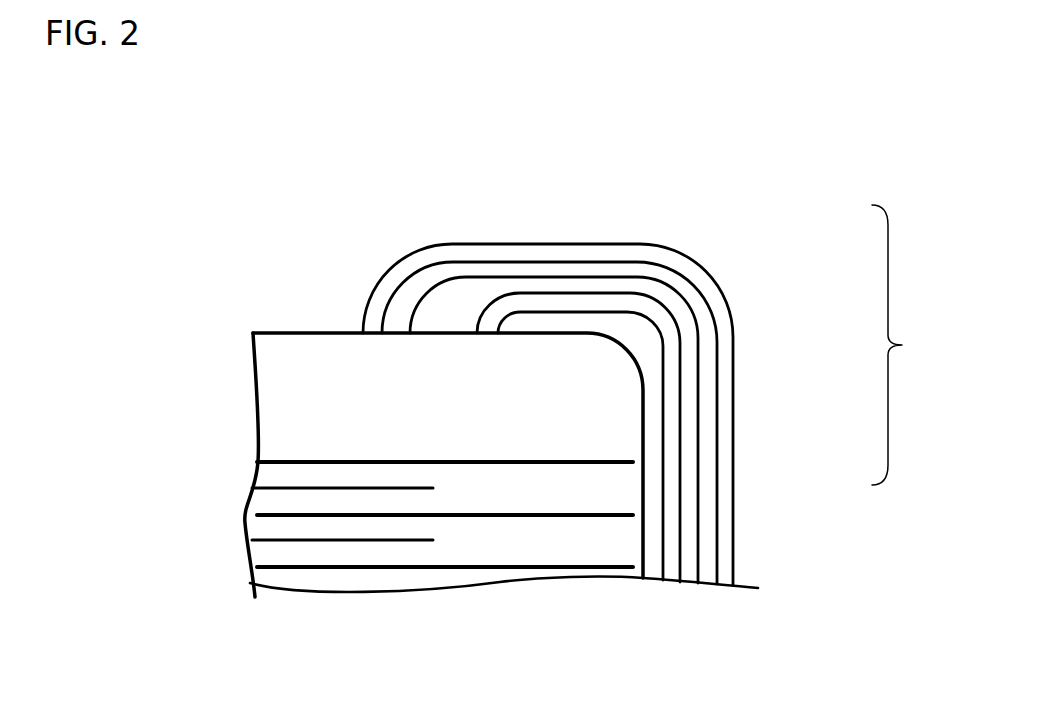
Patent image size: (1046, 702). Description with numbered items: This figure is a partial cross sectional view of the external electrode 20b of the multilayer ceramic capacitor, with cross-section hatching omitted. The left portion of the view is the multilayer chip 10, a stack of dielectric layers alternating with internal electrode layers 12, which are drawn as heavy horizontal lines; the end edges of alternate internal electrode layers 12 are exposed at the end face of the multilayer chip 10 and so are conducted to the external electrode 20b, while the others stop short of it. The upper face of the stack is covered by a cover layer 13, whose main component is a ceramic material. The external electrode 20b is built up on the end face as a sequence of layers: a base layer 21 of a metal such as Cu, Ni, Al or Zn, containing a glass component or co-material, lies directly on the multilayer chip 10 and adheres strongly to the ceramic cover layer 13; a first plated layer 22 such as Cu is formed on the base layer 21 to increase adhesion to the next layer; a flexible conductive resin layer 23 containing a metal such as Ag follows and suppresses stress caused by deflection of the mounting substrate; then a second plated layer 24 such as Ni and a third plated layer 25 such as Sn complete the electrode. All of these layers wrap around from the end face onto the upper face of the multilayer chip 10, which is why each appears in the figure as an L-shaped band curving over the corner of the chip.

The multilayer chip 10 is at (273, 327).
The internal electrode layer 12 is at (493, 570).
The cover layer 13 is at (333, 375).
The external electrode 20b is at (916, 345).
The base layer 21 is at (662, 482).
The first plated layer 22 is at (668, 420).
The conductive resin layer 23 is at (688, 365).
The second plated layer 24 is at (698, 318).
The third plated layer 25 is at (693, 280).